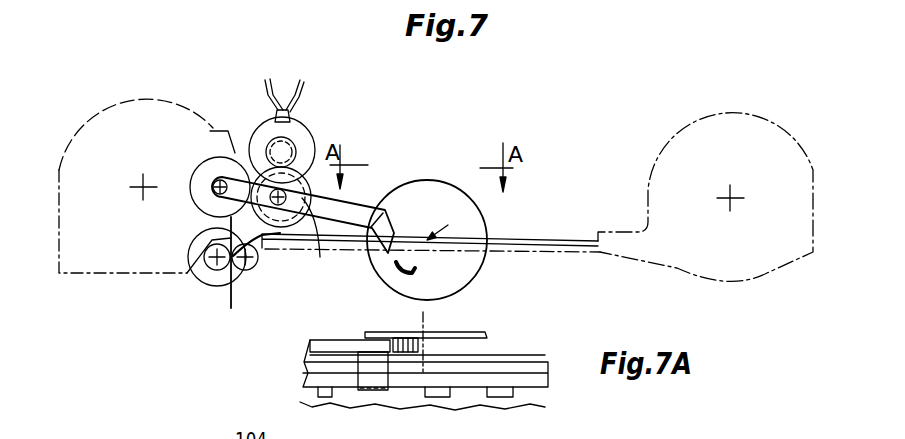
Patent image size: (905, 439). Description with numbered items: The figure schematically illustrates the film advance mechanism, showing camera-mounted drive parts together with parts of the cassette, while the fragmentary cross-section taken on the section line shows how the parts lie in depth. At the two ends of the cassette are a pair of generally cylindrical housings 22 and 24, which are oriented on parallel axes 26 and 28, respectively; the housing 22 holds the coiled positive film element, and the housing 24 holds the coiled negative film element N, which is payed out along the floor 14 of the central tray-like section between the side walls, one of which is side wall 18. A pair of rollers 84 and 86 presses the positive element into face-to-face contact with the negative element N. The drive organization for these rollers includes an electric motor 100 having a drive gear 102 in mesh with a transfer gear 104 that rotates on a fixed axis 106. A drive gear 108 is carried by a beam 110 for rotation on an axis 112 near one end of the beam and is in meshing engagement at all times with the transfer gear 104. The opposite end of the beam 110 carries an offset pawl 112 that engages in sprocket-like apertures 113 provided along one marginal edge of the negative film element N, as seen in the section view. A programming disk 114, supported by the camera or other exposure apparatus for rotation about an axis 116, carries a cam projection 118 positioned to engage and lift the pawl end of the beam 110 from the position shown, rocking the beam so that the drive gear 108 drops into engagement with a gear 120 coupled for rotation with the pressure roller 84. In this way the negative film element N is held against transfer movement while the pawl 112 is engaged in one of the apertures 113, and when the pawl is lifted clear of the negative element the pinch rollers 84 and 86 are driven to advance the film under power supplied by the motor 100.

In FIG. 7, the floor 14 is at (508, 252).
In FIG. 7A, the side wall 18 is at (522, 364).
In FIG. 7, the housing 22 is at (110, 103).
In FIG. 7, the housing 24 is at (758, 113).
In FIG. 7, the axis 26 is at (141, 176).
In FIG. 7, the axis 28 is at (734, 198).
In FIG. 7, the pressure roller 84 is at (215, 269).
In FIG. 7, the roller 86 is at (250, 269).
In FIG. 7, the electric motor 100 is at (292, 129).
In FIG. 7, the drive gear 102 is at (294, 141).
In FIG. 7, the transfer gear 104 is at (332, 192).
In FIG. 7, the fixed axis 106 is at (311, 238).
In FIG. 7, the drive gear 108 is at (217, 160).
In FIG. 7, the beam 110 is at (372, 216).
In FIG. 7A, the beam 110 is at (340, 343).
In FIG. 7, the axis / offset pawl 112 is at (211, 197).
In FIG. 7A, the axis / offset pawl 112 is at (366, 396).
In FIG. 7A, the sprocket-like apertures 113 is at (452, 397).
In FIG. 7, the programming disk 114 is at (441, 195).
In FIG. 7A, the programming disk 114 is at (487, 335).
In FIG. 7, the axis 116 is at (450, 223).
In FIG. 7A, the axis 116 is at (425, 313).
In FIG. 7, the cam projection 118 is at (418, 270).
In FIG. 7A, the cam projection 118 is at (420, 350).
In FIG. 7, the gear 120 is at (232, 238).
In FIG. 7A, the negative film element N is at (532, 395).